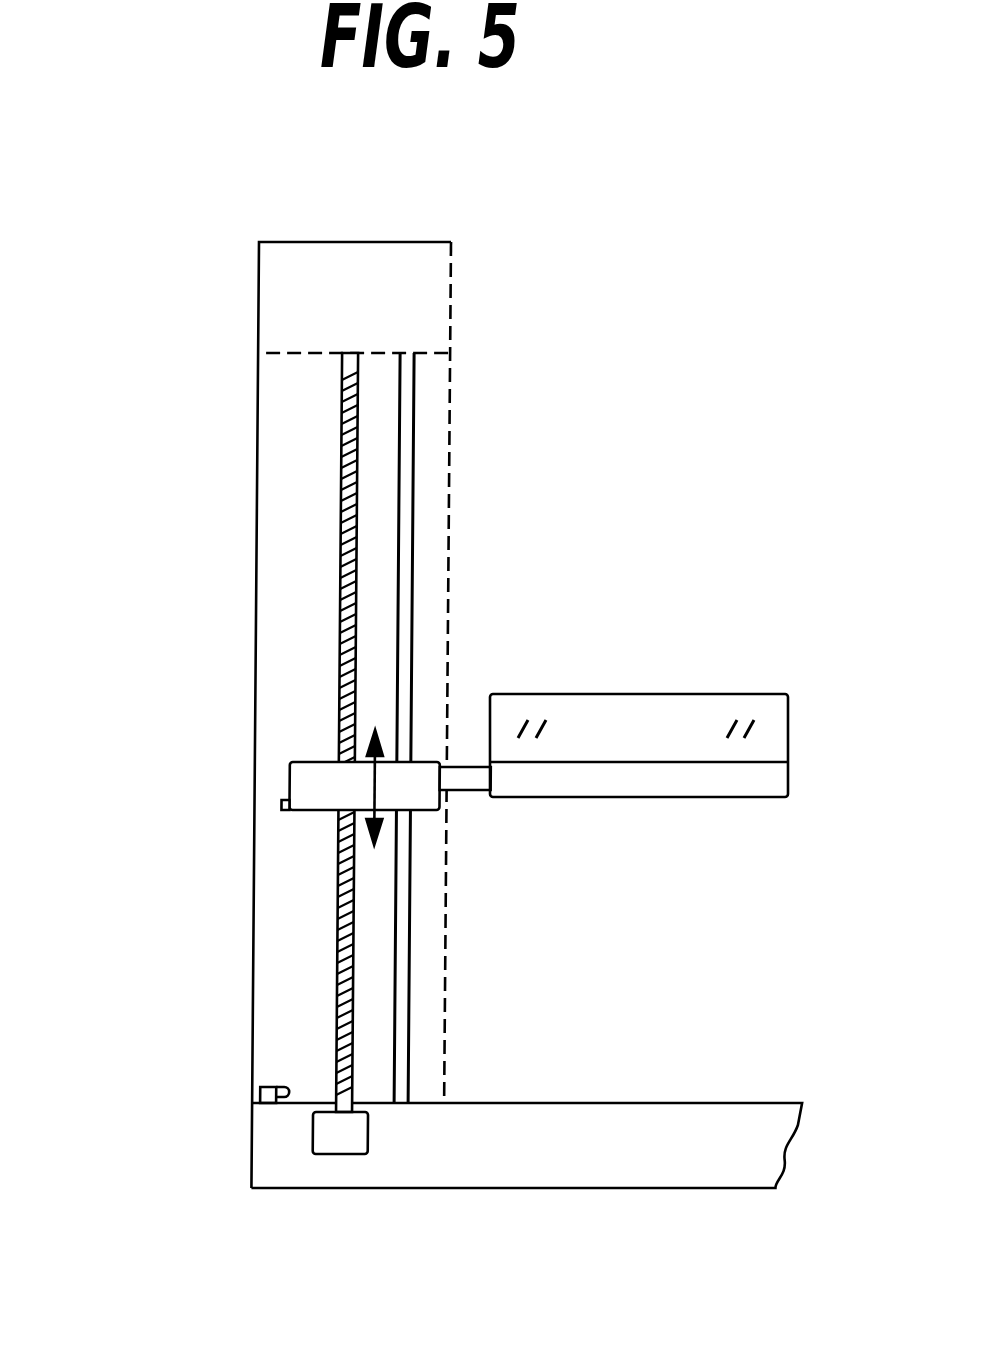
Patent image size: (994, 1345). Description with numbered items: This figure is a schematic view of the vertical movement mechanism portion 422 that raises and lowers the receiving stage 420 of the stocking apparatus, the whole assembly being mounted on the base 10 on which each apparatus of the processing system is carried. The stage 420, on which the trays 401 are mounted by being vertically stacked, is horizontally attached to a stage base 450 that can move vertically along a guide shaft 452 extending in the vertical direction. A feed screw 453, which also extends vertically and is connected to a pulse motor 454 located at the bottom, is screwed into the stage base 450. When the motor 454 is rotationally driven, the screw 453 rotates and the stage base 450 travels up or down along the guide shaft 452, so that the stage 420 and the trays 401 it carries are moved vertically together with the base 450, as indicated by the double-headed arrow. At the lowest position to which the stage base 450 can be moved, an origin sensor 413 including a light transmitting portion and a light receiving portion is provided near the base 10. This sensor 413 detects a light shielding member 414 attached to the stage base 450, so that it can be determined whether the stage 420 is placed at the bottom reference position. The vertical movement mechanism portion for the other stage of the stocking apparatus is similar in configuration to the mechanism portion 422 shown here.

The base 10 is at (575, 1142).
The tray 401 is at (647, 703).
The origin sensor 413 is at (260, 1095).
The light shielding member 414 is at (283, 805).
The receiving stage 420 is at (577, 780).
The vertical movement mechanism portion 422 is at (250, 570).
The stage base 450 is at (303, 773).
The guide shaft 452 is at (402, 653).
The feed screw 453 is at (338, 975).
The pulse motor 454 is at (317, 1147).